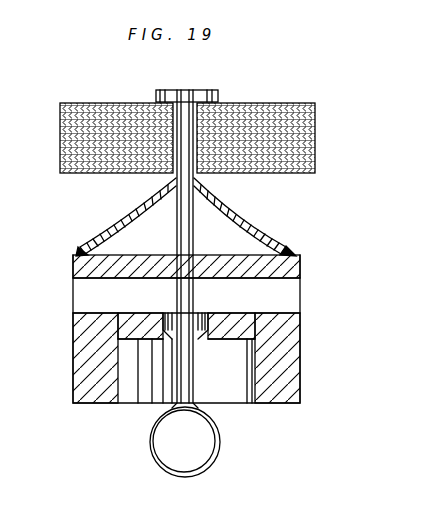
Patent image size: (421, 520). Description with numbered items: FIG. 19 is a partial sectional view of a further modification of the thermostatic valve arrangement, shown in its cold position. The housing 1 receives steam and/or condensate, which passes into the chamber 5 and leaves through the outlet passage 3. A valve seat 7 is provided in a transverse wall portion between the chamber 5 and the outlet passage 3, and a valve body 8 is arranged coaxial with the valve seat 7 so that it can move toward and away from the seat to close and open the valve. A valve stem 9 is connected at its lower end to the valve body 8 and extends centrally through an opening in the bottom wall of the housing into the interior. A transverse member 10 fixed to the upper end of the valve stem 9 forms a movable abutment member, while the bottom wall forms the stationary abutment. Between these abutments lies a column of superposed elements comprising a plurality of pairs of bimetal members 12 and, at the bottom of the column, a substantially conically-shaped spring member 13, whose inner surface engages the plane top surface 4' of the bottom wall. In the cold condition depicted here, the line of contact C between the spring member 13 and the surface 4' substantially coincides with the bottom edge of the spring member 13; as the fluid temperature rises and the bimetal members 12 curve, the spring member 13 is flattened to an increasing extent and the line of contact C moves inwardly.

The housing 1 is at (300, 332).
The outlet passage 3 is at (142, 386).
The plane top surface 4' is at (186, 253).
The chamber 5 is at (288, 291).
The valve seat 7 is at (200, 344).
The valve body 8 is at (208, 438).
The valve stem 9 is at (177, 231).
The transverse member 10 is at (156, 97).
The bimetal members 12 is at (317, 116).
The spring member 13 is at (262, 232).
The line of contact C is at (76, 256).